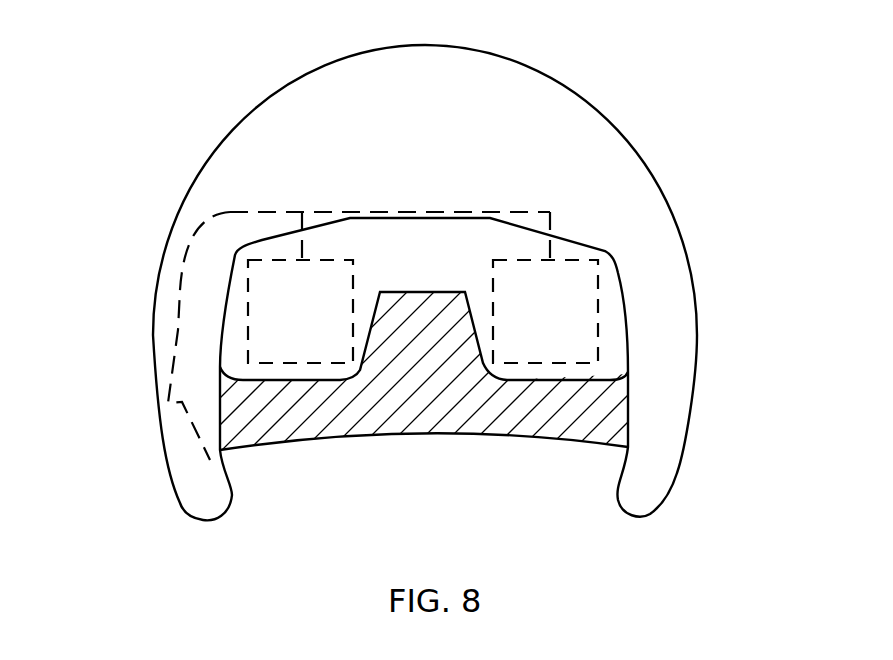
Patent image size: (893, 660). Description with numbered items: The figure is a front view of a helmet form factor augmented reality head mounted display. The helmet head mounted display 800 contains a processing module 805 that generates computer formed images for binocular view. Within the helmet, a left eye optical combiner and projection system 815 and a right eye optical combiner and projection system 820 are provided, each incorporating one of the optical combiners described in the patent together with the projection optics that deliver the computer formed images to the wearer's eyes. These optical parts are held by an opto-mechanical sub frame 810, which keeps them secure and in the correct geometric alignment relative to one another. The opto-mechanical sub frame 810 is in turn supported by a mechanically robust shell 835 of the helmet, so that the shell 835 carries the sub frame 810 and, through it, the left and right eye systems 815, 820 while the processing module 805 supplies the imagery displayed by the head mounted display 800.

The helmet head mounted display 800 is at (153, 478).
The processing module 805 is at (203, 465).
The opto-mechanical sub frame 810 is at (243, 287).
The left eye optical combiner and projection system 815 is at (300, 311).
The right eye optical combiner and projection system 820 is at (545, 311).
The mechanically robust shell 835 is at (692, 337).